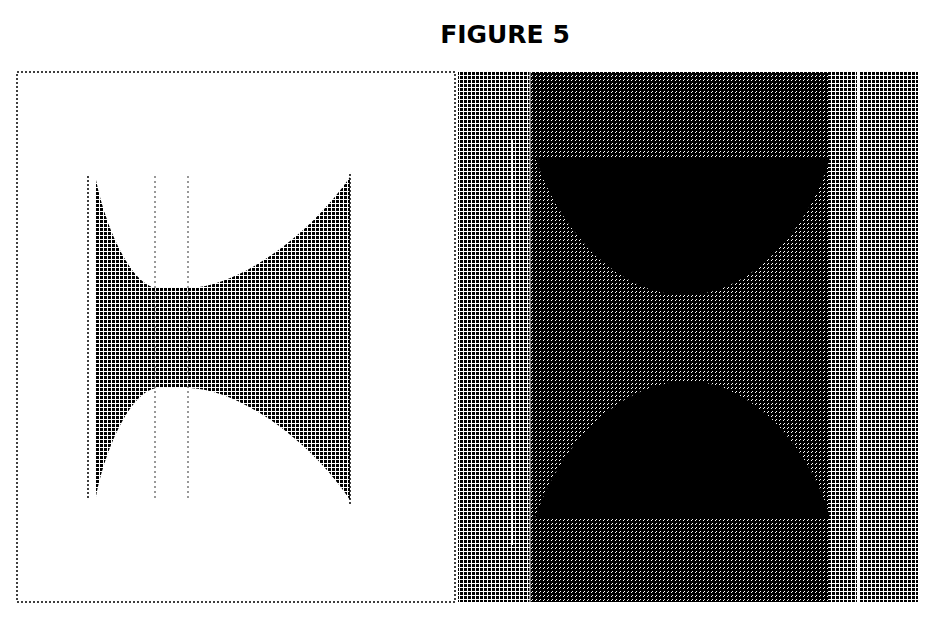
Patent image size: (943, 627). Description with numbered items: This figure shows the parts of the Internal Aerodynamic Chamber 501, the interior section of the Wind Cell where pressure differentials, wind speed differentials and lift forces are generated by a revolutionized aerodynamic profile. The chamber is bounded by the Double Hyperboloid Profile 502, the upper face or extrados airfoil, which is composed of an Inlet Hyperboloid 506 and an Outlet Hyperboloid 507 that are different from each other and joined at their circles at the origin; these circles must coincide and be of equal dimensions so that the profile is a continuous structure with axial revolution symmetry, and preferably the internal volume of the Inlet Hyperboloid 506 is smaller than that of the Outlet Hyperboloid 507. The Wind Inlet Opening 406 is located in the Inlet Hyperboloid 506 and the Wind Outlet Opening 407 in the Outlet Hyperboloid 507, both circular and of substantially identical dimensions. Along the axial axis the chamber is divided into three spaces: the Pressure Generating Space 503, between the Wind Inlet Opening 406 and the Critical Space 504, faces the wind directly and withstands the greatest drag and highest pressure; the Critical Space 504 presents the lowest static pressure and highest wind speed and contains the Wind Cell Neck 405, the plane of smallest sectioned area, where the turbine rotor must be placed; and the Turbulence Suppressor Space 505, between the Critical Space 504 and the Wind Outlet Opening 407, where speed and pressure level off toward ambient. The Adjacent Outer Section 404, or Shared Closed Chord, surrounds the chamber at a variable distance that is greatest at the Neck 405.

The Adjacent Outer Section 404 is at (613, 120).
The Wind Cell Neck 405 is at (627, 385).
The Wind Inlet Opening 406 is at (276, 342).
The Wind Outlet Opening 407 is at (619, 337).
The Internal Aerodynamic Chamber 501 is at (211, 338).
The Double Hyperboloid Profile 502 is at (222, 282).
The Pressure Generating Space 503 is at (147, 338).
The Critical Space 504 is at (173, 345).
The Turbulence Suppressor Space 505 is at (223, 338).
The Inlet Hyperboloid 506 is at (564, 337).
The Outlet Hyperboloid 507 is at (679, 337).